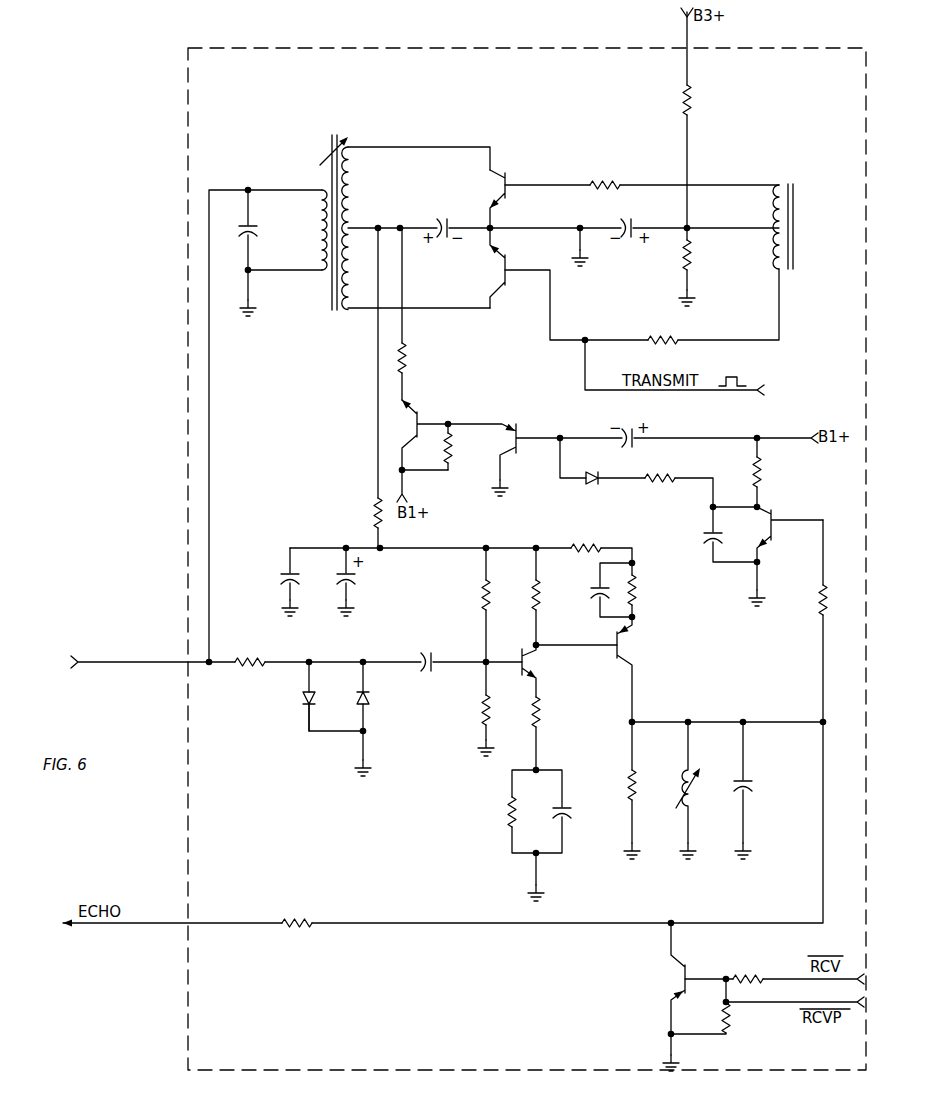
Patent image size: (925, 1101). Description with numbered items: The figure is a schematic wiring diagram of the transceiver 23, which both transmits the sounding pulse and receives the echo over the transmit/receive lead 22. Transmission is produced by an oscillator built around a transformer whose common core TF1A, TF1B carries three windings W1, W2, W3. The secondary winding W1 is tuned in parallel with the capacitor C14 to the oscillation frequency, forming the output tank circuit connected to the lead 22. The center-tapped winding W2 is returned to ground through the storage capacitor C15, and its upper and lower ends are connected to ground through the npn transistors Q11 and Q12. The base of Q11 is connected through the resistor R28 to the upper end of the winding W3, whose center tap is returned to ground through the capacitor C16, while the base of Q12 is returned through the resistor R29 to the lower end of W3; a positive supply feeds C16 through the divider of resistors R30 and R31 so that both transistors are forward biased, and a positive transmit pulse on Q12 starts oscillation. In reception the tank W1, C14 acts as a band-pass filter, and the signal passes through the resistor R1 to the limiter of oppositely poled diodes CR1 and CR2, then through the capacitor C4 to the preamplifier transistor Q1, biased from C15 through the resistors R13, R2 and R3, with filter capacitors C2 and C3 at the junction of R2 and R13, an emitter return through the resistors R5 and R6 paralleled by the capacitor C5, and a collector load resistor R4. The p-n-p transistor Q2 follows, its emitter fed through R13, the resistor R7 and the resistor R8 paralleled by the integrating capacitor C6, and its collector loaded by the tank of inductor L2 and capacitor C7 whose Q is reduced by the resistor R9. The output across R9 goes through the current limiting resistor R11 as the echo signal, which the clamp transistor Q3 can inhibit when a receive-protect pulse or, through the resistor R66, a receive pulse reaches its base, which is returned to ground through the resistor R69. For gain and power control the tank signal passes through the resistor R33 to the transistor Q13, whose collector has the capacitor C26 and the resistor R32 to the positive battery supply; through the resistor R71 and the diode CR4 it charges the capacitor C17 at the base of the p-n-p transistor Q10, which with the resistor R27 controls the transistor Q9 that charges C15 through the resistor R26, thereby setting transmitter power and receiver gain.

The transmit/receive lead 22 is at (143, 662).
The transceiver 23 is at (327, 1037).
The common core TF1A is at (324, 212).
The common core TF1B is at (803, 215).
The secondary winding W1 is at (324, 242).
The center-tapped winding W2 is at (348, 206).
The winding W3 is at (776, 243).
The capacitor C14 is at (266, 253).
The storage capacitor C15 is at (443, 217).
The capacitor C16 is at (627, 216).
The capacitor C17 is at (628, 426).
The capacitor C26 is at (695, 525).
The filter capacitor C2 is at (277, 582).
The filter capacitor C3 is at (358, 582).
The capacitor C4 is at (427, 650).
The filter capacitor C5 is at (576, 813).
The integrating capacitor C6 is at (586, 592).
The capacitor C7 is at (753, 790).
The n-p-n transistor Q1 is at (537, 671).
The p-n-p transistor Q2 is at (633, 669).
The n-p-n transistor Q3 is at (668, 978).
The n-p-n transistor Q9 is at (416, 433).
The p-n-p transistor Q10 is at (504, 456).
The npn transistor Q11 is at (485, 199).
The npn transistor Q12 is at (481, 268).
The n-p-n transistor Q13 is at (789, 530).
The resistor R1 is at (250, 652).
The resistor R2 is at (473, 605).
The resistor R3 is at (476, 709).
The resistor R4 is at (522, 596).
The resistor R5 is at (548, 733).
The resistor R6 is at (500, 812).
The resistor R7 is at (586, 539).
The resistor R8 is at (645, 590).
The resistor R9 is at (643, 790).
The current limiting resistor R11 is at (299, 913).
The resistor R13 is at (362, 513).
The resistor R26 is at (418, 358).
The resistor R27 is at (464, 447).
The resistor R28 is at (605, 176).
The resistor R29 is at (662, 331).
The resistor R30 is at (705, 100).
The resistor R31 is at (703, 273).
The resistor R32 is at (773, 472).
The resistor R33 is at (805, 621).
The resistor R66 is at (752, 970).
The resistor R69 is at (743, 1006).
The resistor R71 is at (658, 489).
The diode CR1 is at (292, 696).
The diode CR2 is at (380, 719).
The diode CR4 is at (590, 489).
The inductor L2 is at (697, 790).